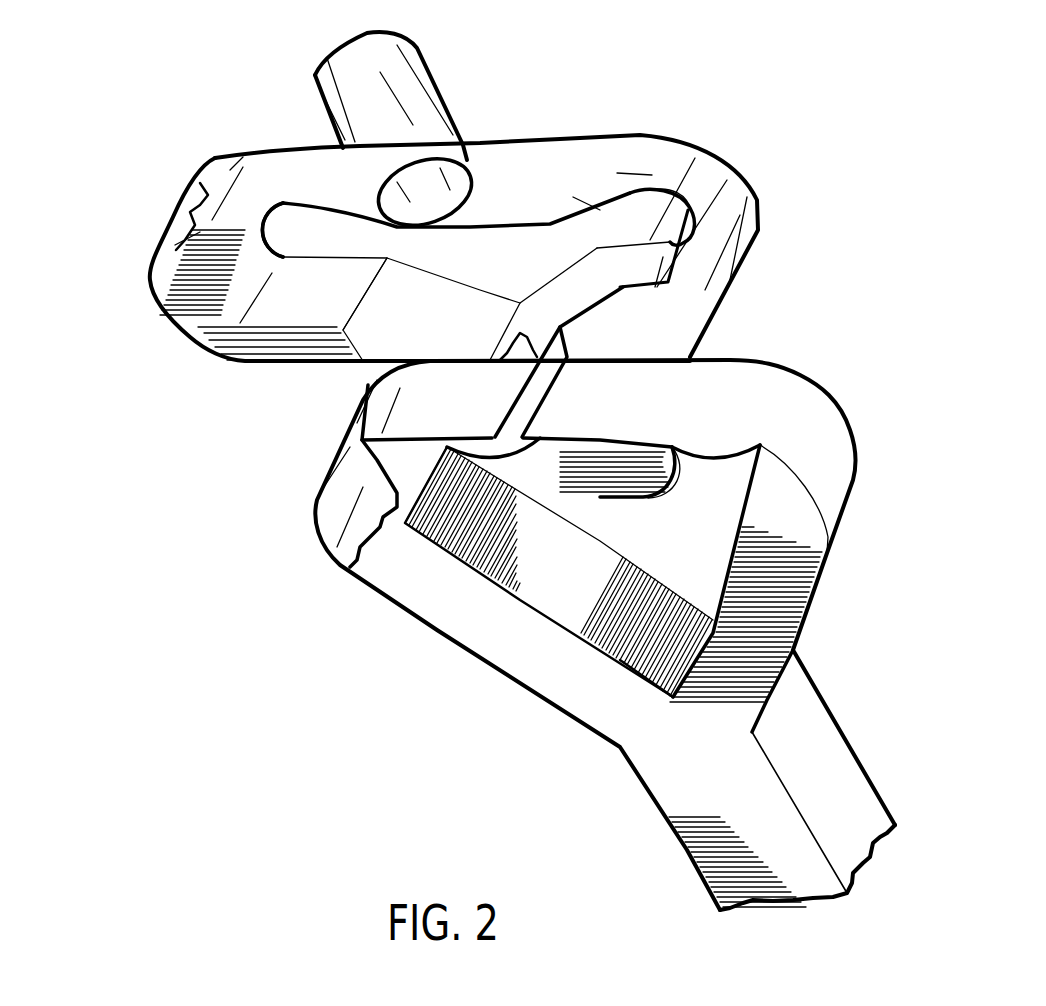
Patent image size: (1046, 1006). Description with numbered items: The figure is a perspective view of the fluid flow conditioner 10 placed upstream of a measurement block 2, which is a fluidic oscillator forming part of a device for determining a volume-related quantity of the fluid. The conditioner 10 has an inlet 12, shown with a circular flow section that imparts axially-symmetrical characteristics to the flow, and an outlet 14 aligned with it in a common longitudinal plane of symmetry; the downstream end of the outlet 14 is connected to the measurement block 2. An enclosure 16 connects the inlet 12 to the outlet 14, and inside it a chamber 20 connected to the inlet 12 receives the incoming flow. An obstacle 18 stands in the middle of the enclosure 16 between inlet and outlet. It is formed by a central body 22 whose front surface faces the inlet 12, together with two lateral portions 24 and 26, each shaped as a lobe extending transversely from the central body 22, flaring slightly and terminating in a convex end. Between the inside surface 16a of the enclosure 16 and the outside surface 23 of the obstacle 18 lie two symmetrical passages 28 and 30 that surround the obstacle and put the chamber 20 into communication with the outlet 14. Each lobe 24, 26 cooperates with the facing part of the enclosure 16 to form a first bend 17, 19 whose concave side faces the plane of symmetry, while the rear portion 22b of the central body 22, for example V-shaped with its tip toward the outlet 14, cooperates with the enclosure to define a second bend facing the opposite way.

The measurement block 2 is at (410, 647).
The fluid flow conditioner 10 is at (652, 135).
The inlet 12 is at (437, 182).
The outlet 14 is at (687, 357).
The enclosure 16 is at (760, 197).
The inside surface 16a is at (207, 190).
The first bend 17 is at (186, 290).
The obstacle 18 is at (573, 197).
The first bend 19 is at (723, 242).
The chamber 20 is at (476, 220).
The central body 22 is at (522, 250).
The rear portion 22b is at (447, 278).
The outside surface 23 is at (290, 297).
The lateral portion 24 is at (313, 222).
The lateral portion 26 is at (663, 213).
The passage 28 is at (250, 190).
The passage 30 is at (617, 173).